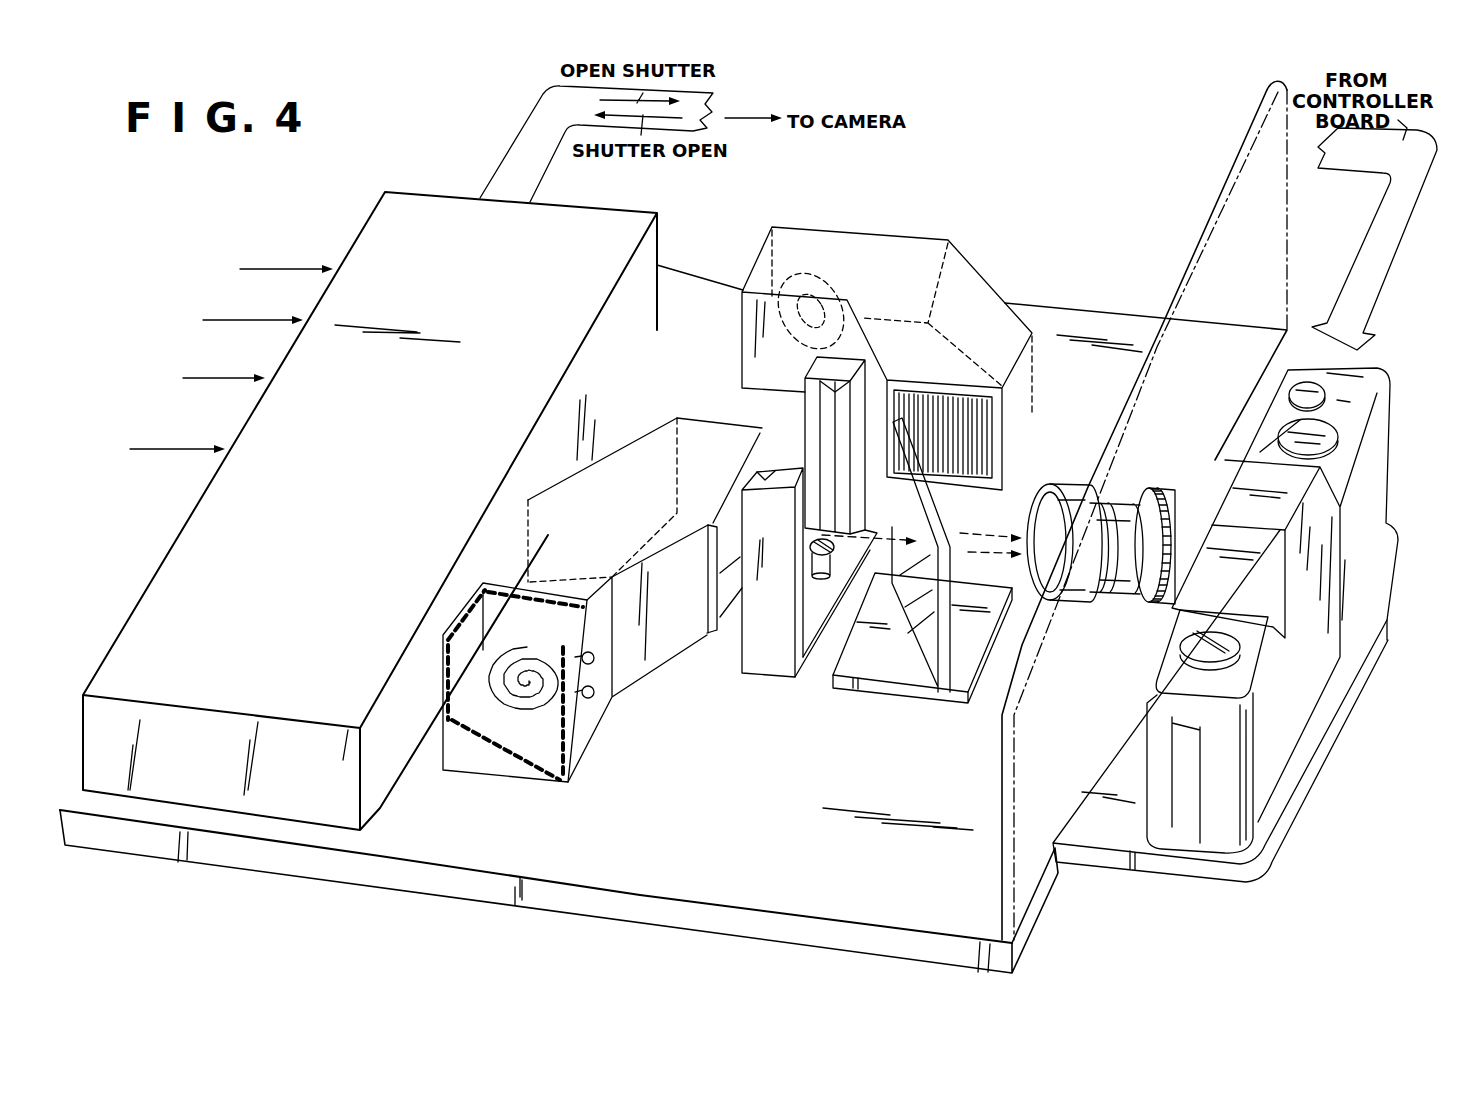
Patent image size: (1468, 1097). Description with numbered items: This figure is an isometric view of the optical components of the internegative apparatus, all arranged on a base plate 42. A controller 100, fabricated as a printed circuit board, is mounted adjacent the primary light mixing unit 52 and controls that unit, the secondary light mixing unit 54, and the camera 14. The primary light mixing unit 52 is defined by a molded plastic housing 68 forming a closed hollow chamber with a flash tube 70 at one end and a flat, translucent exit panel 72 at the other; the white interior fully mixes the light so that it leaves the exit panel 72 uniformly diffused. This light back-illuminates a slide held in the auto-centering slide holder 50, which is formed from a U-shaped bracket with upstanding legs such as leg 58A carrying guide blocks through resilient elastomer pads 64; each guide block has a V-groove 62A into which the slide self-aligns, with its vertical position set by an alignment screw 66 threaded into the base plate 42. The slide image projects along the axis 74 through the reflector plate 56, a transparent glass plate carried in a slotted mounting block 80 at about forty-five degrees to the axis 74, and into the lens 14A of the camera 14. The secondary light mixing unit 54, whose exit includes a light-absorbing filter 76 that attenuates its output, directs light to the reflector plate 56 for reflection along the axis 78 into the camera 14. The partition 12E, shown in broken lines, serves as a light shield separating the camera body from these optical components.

The controller 100 is at (393, 450).
The base plate 42 is at (784, 786).
The secondary light mixing unit 54 is at (860, 223).
The light-absorbing filter 76 is at (975, 474).
The flash tube 70 is at (760, 270).
The primary light mixing unit 52 is at (645, 484).
The housing 68 is at (661, 652).
The exit panel 72 is at (728, 548).
The V-groove 62A is at (823, 391).
The resilient elastomer pads 64 is at (817, 360).
The auto-centering slide holder 50 is at (762, 664).
The leg 58A is at (783, 610).
The alignment screw 66 is at (830, 570).
The axis 78 is at (930, 486).
The slotted mounting block 80 is at (892, 663).
The reflector plate 56 is at (932, 657).
The axis 74 is at (967, 553).
The internal partition 12E is at (1205, 232).
The lens 14A is at (1113, 700).
The camera 14 is at (1399, 457).